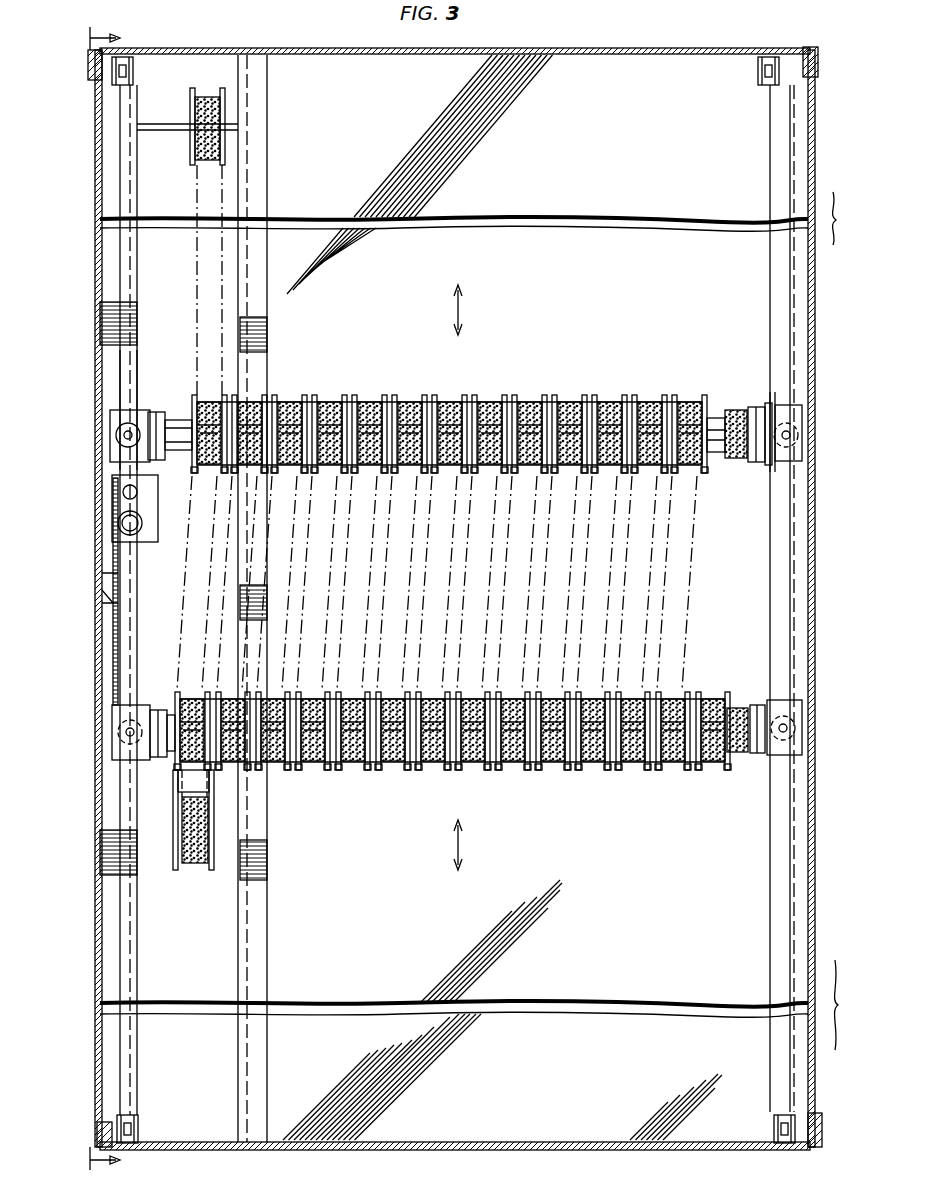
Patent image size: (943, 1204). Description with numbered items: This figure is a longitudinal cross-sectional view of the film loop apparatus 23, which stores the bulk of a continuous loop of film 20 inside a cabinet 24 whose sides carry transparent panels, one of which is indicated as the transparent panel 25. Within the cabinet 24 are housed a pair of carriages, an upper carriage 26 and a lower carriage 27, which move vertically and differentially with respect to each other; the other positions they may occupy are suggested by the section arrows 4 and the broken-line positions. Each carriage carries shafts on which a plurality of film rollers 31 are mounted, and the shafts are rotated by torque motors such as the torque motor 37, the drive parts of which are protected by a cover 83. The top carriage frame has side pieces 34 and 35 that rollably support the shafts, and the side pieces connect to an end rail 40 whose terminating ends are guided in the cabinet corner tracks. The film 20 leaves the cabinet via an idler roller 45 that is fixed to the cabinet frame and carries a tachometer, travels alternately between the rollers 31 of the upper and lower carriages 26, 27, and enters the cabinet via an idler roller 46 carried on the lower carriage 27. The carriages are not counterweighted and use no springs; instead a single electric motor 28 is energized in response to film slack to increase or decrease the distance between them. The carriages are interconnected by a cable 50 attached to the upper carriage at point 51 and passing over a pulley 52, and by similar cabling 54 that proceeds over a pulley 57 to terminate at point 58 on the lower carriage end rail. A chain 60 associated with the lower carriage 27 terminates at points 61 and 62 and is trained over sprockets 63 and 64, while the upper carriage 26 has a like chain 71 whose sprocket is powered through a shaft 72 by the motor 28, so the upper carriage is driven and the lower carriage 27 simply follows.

The section line 4- 4 is at (115, 599).
The film 20 is at (695, 585).
The film loop apparatus 23 is at (748, 37).
The cabinet 24 is at (655, 50).
The transparent panel 25 is at (815, 582).
The upper carriage 26 is at (726, 396).
The lower carriage 27 is at (750, 768).
The electric motor 28 is at (118, 522).
The film roller 31 is at (378, 403).
The side piece 34 is at (150, 412).
The side piece 35 is at (755, 456).
The torque motor 37 is at (784, 464).
The end rail 40 is at (714, 477).
The idler roller 45 is at (215, 100).
The idler roller 46 is at (192, 870).
The cable 50 is at (120, 170).
The attachment point 51 is at (118, 412).
The pulley 52 is at (118, 75).
The cable 54 is at (772, 162).
The pulley 57 is at (758, 70).
The termination point 58 is at (772, 700).
The chain 60 is at (118, 697).
The chain end point 61 is at (112, 603).
The chain end point 62 is at (800, 1135).
The sprocket 63 is at (115, 745).
The sprocket 64 is at (798, 730).
The chain 71 is at (768, 330).
The shaft 72 is at (124, 437).
The cover 83 is at (740, 706).